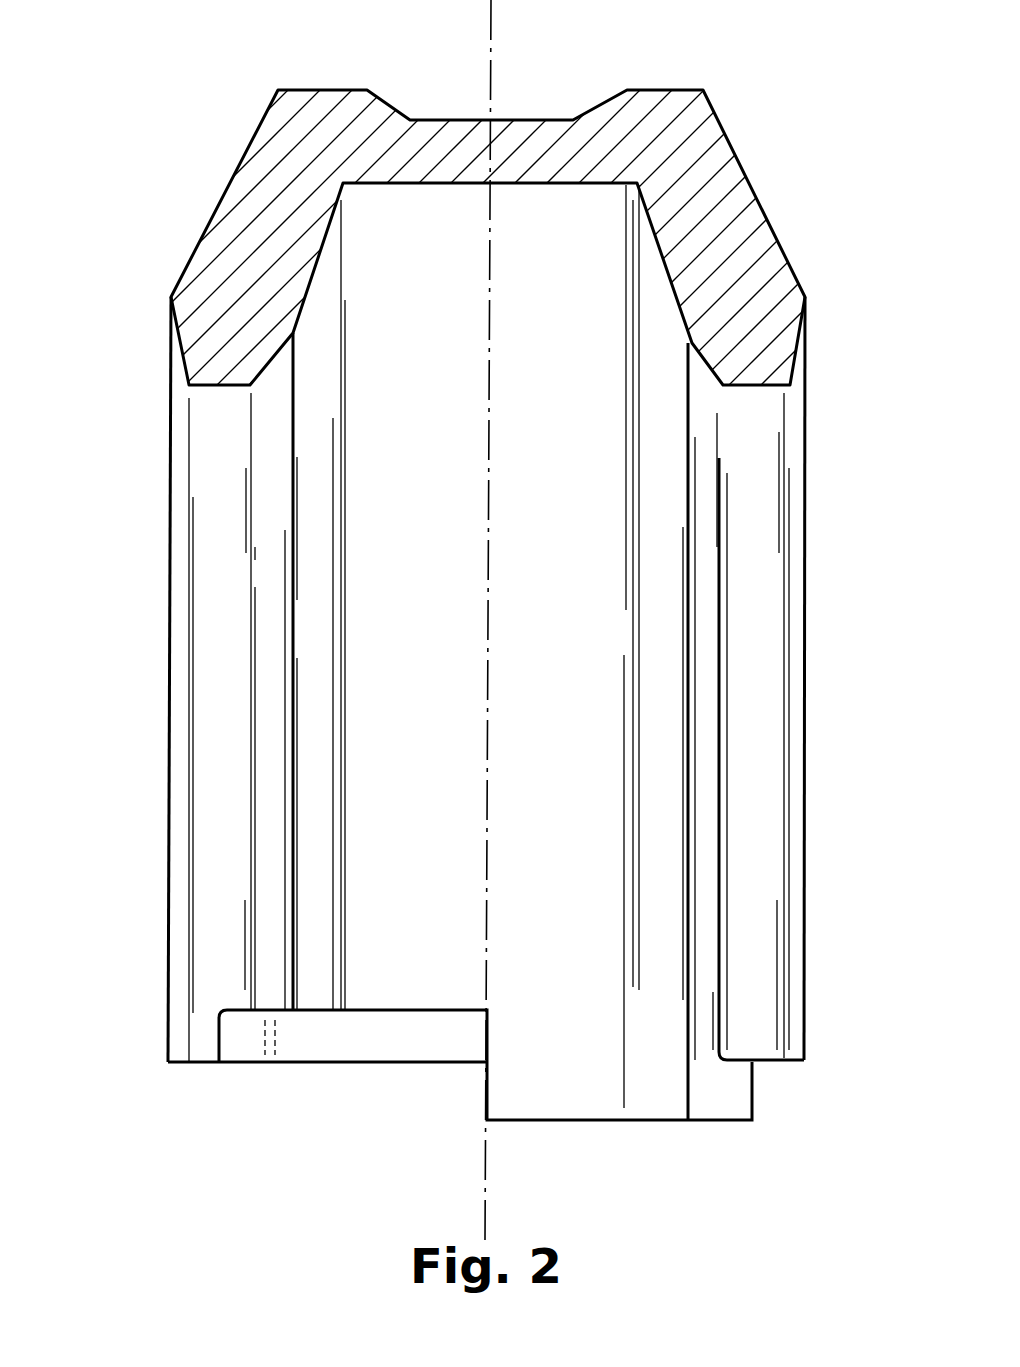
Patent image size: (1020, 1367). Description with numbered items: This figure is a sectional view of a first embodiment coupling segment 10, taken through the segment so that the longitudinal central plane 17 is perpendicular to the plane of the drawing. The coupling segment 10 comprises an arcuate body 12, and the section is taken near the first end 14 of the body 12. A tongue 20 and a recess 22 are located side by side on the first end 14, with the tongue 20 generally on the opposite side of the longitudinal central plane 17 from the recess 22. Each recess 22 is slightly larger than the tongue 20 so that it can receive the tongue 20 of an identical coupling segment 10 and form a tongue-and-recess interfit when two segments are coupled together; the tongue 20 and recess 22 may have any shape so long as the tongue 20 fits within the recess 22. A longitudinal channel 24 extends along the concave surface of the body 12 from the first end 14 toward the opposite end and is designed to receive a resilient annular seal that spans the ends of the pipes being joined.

The coupling segment 10 is at (805, 460).
The arcuate body 12 is at (218, 535).
The first end 14 is at (168, 1062).
The longitudinal central plane 17 is at (492, 38).
The tongue 20 is at (737, 1123).
The recess 22 is at (260, 1047).
The longitudinal channel 24 is at (385, 297).